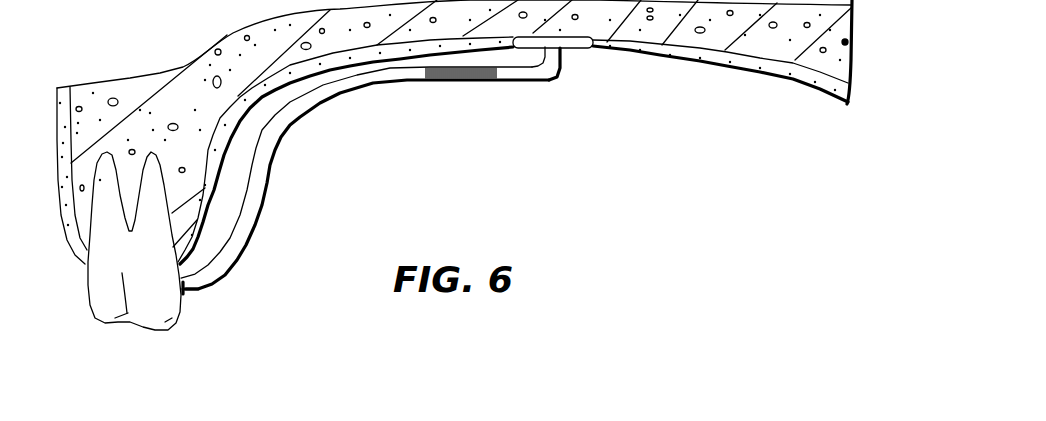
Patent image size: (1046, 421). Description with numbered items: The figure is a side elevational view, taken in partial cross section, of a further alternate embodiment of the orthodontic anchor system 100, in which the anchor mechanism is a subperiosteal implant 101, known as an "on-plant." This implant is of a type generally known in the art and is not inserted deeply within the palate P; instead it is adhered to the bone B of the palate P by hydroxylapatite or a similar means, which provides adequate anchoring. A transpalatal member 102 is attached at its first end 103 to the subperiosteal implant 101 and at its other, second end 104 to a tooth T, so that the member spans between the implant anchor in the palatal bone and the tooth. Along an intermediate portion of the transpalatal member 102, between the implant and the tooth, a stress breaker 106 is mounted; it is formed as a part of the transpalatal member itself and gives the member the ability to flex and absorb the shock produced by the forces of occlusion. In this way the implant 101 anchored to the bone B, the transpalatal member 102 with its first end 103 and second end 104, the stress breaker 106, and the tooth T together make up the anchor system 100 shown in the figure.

The orthodontic anchor system 100 is at (414, 187).
The subperiosteal implant 101 is at (585, 49).
The transpalatal member 102 is at (290, 130).
The first end 103 is at (563, 72).
The second end 104 is at (194, 291).
The stress breaker 106 is at (480, 82).
The bone B is at (855, 30).
The palate P is at (849, 88).
The tooth T is at (83, 283).